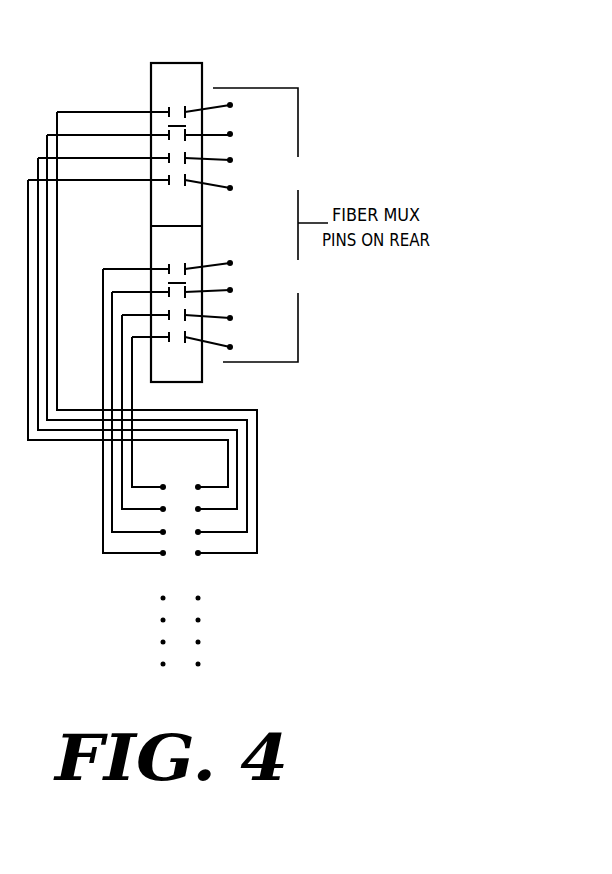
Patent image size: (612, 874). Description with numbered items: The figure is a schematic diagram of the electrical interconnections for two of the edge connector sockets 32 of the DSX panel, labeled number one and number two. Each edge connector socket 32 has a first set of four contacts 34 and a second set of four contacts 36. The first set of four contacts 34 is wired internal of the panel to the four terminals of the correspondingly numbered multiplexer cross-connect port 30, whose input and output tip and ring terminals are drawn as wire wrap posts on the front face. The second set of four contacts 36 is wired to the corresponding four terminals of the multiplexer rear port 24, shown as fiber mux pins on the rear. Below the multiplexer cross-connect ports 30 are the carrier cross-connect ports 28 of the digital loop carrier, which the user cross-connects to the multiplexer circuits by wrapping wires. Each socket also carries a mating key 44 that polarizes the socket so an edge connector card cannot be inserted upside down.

The multiplexer rear port 24 is at (232, 192).
The carrier cross-connect port 28 is at (201, 665).
The multiplexer cross-connect port 30 is at (200, 556).
The edge connector socket 32 is at (151, 190).
The first set of four contacts 34 is at (170, 69).
The second set of four contacts 36 is at (189, 74).
The mating key 44 is at (178, 124).